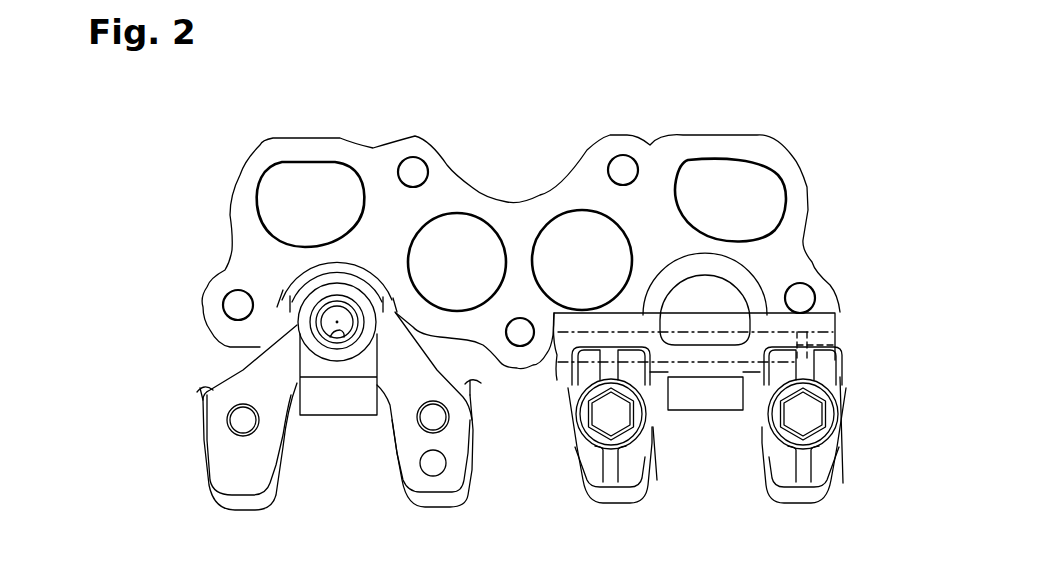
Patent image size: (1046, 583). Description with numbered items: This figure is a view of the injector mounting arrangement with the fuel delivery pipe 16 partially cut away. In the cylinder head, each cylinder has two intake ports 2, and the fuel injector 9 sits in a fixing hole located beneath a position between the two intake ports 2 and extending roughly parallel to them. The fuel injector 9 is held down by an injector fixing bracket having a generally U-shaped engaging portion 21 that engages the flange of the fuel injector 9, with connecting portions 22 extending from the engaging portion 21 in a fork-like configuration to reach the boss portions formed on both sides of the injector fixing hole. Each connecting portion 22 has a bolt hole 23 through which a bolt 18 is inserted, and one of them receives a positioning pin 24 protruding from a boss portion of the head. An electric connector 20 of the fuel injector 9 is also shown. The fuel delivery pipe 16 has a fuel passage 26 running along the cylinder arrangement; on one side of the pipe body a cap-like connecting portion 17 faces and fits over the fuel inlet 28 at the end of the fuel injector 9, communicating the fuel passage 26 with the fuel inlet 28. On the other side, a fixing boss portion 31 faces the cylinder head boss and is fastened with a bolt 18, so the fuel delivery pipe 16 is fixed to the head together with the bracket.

The intake port 2 is at (283, 180).
The fuel injector 9 is at (302, 287).
The fuel delivery pipe 16 is at (825, 323).
The connecting portion 17 is at (720, 293).
The bolt 18 is at (598, 415).
The electric connector 20 is at (348, 410).
The engaging portion 21 is at (313, 315).
The connecting portion 22 is at (225, 476).
The bolt hole 23 is at (228, 420).
The positioning pin 24 is at (432, 470).
The fuel passage 26 is at (808, 335).
The fuel inlet 28 is at (336, 337).
The fixing boss portion 31 is at (630, 457).